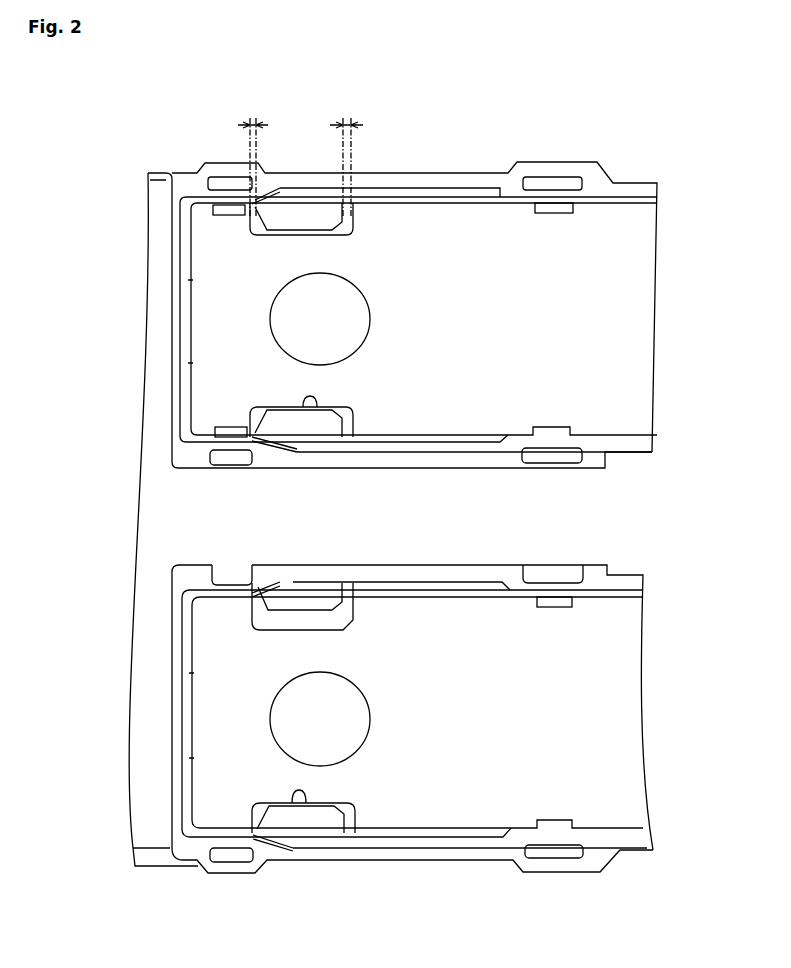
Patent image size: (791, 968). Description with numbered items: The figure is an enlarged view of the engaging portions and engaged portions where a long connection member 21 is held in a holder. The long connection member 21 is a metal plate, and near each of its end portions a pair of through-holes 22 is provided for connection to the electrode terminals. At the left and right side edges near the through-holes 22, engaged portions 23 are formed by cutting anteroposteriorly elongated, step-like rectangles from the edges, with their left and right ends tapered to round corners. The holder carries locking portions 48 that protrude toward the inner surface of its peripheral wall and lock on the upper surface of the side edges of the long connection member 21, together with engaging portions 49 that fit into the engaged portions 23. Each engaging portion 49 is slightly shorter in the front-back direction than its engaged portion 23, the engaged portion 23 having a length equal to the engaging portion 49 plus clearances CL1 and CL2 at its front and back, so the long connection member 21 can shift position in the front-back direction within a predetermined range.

The long connection member 21 is at (516, 235).
The through-holes 22 is at (370, 333).
The engaged portions 23 is at (345, 228).
The locking portions 48 is at (227, 210).
The engaging portions 49 is at (352, 214).
The clearance CL1 is at (250, 120).
The clearance CL2 is at (345, 120).